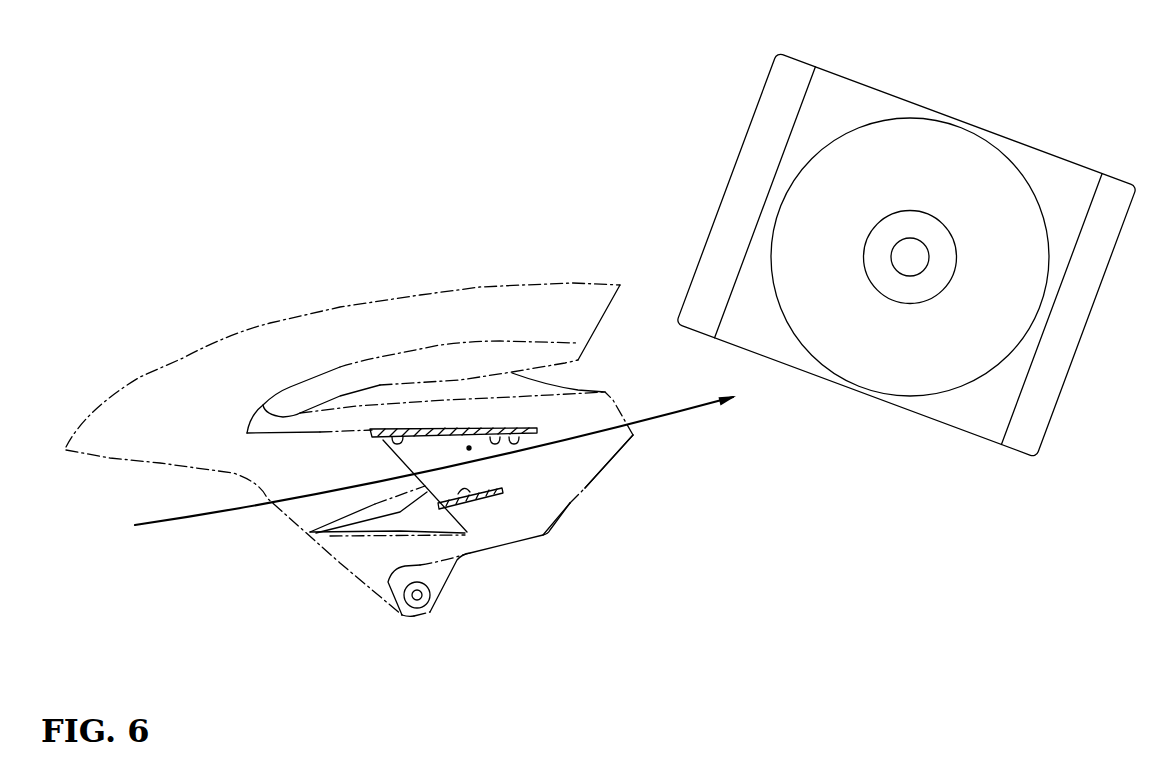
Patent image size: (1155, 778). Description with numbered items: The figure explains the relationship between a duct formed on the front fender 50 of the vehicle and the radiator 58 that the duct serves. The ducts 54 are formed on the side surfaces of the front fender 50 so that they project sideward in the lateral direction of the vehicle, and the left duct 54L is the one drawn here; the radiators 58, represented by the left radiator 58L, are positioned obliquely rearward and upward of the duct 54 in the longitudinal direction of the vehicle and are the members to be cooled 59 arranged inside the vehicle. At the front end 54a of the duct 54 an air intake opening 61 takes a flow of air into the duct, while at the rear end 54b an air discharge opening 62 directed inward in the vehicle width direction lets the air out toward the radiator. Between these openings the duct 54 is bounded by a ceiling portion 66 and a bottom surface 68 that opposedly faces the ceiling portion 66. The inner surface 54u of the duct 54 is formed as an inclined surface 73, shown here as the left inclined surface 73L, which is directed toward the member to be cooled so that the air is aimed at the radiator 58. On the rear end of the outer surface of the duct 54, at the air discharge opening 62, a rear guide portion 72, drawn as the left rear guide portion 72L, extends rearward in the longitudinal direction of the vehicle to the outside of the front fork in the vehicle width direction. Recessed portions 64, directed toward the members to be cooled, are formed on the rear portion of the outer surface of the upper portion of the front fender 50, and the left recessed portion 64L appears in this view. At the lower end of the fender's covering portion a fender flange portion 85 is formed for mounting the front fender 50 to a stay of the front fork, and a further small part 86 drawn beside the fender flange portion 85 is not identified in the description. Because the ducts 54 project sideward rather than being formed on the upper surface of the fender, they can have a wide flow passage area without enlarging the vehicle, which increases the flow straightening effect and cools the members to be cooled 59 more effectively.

The front fender 50 is at (185, 358).
The duct 54 is at (418, 437).
The left duct 54L is at (445, 336).
The front end of the duct 54a is at (384, 437).
The inner surface of the duct 54u is at (462, 430).
The rear end of the duct 54b is at (508, 430).
The radiator 58 is at (906, 245).
The left radiator 58L is at (906, 245).
The members to be cooled 59 is at (860, 100).
The air intake opening 61 is at (337, 397).
The air discharge opening 62 is at (527, 438).
The recessed portions 64 is at (328, 375).
The left air intake 64L is at (390, 339).
The ceiling portion 66 is at (469, 448).
The bottom surface 68 is at (474, 500).
The rear guide portion 72 is at (598, 477).
The left side cover 72L is at (628, 492).
The inclined surface 73 is at (497, 492).
The left lower opening 73L is at (540, 538).
The fender flange portions 85 is at (388, 582).
The fastener 86 is at (420, 608).